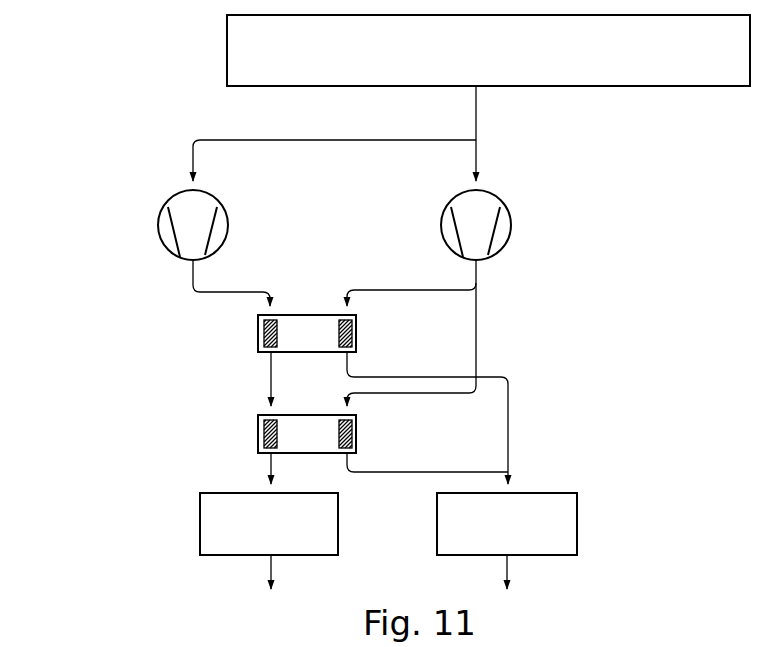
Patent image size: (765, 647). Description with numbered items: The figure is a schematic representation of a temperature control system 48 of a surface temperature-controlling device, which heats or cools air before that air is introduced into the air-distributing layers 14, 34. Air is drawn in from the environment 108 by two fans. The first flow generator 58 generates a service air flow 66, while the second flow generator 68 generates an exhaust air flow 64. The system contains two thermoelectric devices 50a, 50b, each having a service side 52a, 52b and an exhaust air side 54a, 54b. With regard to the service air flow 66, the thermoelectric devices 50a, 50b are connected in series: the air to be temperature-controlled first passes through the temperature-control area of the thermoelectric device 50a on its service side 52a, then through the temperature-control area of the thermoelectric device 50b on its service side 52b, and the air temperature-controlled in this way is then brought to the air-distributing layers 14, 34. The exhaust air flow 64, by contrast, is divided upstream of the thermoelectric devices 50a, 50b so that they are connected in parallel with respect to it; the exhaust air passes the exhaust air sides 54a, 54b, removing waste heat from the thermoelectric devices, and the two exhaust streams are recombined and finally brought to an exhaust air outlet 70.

The temperature control system 48 is at (126, 170).
The environment 108 is at (488, 50).
The exhaust air flow 64 is at (478, 160).
The service air flow 66 is at (220, 140).
The flow generator 58 is at (168, 238).
The flow generator 68 is at (500, 230).
The thermoelectric device 50a is at (300, 301).
The service side 52a is at (258, 330).
The exhaust air side 54a is at (358, 340).
The thermoelectric device 50b is at (300, 404).
The service side 52b is at (258, 430).
The exhaust air side 54b is at (356, 438).
The air-distributing layer 14 is at (269, 541).
The air-distributing layer 34 is at (269, 541).
The exhaust air outlet 70 is at (507, 541).